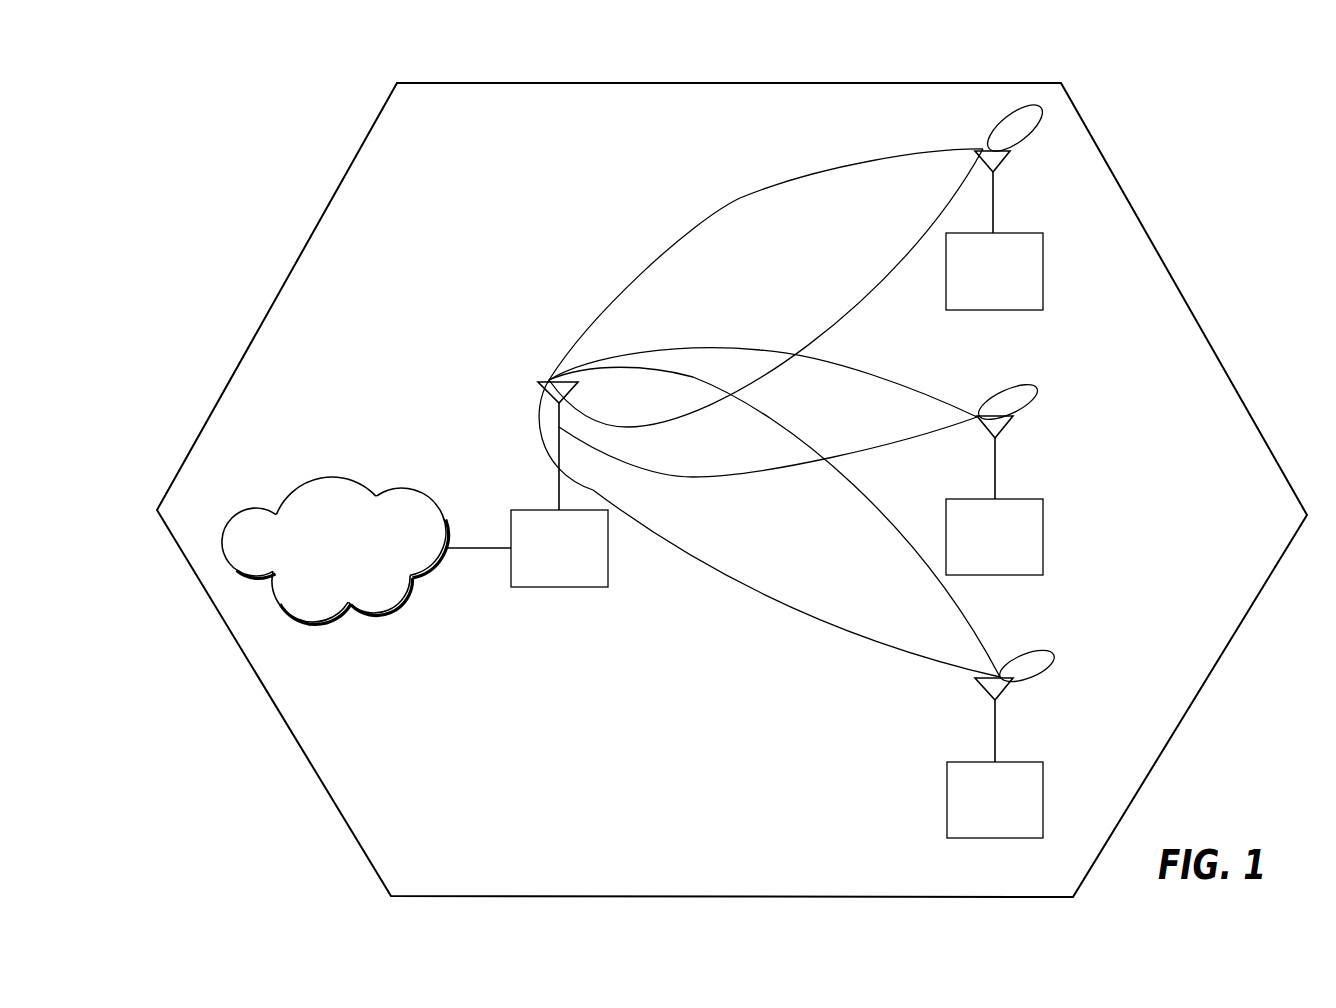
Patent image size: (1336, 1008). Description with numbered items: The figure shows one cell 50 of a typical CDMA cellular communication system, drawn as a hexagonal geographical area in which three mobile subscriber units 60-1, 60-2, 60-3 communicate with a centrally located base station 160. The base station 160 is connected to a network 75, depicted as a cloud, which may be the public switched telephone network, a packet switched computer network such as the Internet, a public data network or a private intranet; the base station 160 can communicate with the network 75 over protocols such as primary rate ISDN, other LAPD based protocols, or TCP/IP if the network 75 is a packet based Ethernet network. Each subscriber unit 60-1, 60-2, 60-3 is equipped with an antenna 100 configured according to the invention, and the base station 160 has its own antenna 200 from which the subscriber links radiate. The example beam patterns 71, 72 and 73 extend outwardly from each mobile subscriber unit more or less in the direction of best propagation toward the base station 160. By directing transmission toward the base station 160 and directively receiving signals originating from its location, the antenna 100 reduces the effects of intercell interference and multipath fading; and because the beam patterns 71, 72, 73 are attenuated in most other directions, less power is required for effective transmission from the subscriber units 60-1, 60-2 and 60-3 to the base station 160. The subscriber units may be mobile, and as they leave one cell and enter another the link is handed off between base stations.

The cell 50 is at (570, 758).
The mobile subscriber unit 60-1 is at (994, 271).
The mobile subscriber unit 60-2 is at (994, 537).
The mobile subscriber unit 60-3 is at (995, 800).
The beam pattern 71 is at (700, 220).
The beam pattern 72 is at (893, 383).
The beam pattern 73 is at (977, 622).
The network 75 is at (348, 553).
The antenna 100 is at (995, 205).
The base station 160 is at (526, 548).
The base station antenna 200 is at (557, 465).